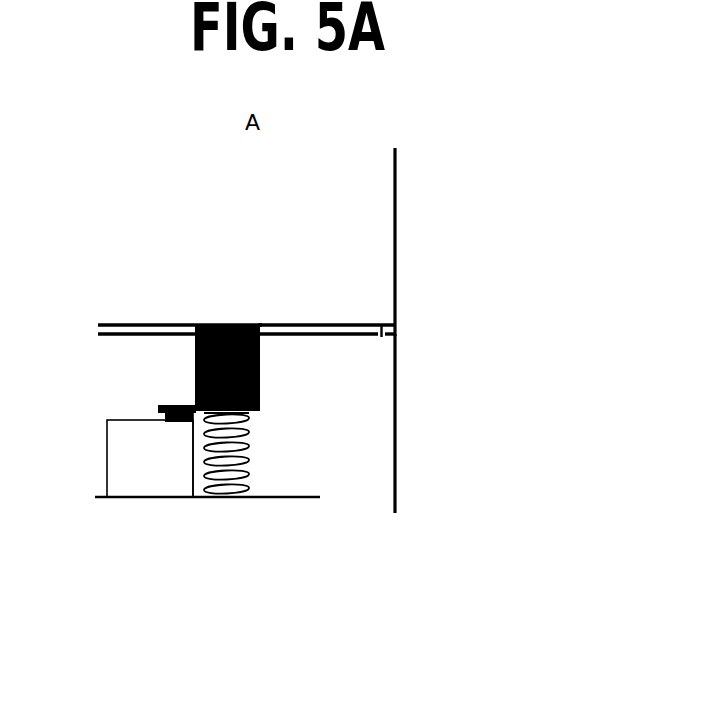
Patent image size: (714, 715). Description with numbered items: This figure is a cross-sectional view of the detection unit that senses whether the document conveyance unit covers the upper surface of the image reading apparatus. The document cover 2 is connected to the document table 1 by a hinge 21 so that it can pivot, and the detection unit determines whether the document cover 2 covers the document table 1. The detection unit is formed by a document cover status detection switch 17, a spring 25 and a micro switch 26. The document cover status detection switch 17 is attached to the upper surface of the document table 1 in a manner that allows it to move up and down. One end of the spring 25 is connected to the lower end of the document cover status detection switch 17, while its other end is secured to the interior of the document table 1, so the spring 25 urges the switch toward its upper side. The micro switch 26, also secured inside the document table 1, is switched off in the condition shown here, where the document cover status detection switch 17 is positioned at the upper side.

The document table 1 is at (403, 408).
The document cover 2 is at (352, 257).
The hinge 21 is at (322, 325).
The document cover status detection switch 17 is at (225, 325).
The spring 25 is at (230, 497).
The micro switch 26 is at (142, 497).